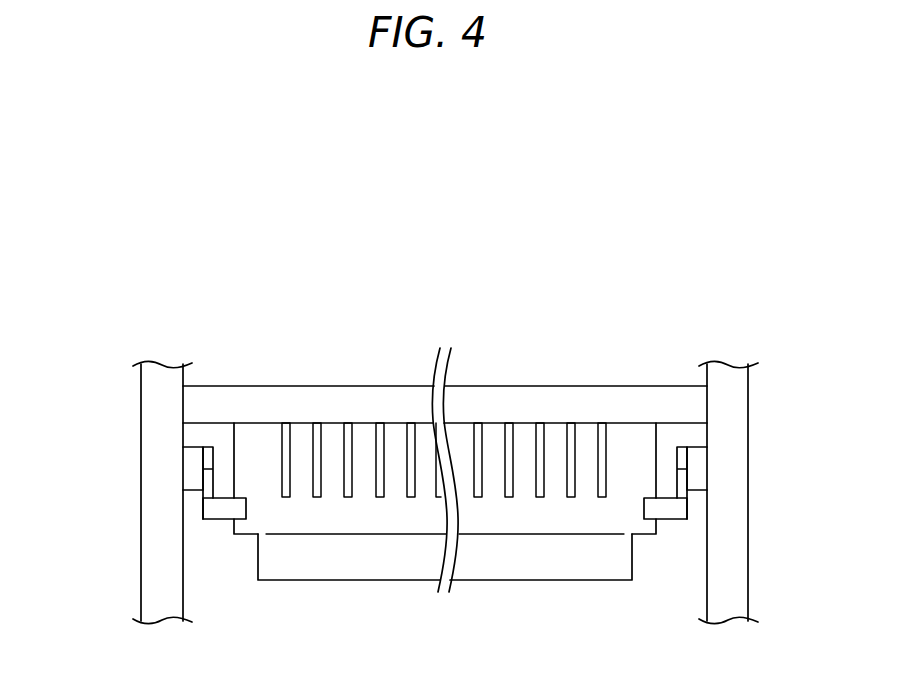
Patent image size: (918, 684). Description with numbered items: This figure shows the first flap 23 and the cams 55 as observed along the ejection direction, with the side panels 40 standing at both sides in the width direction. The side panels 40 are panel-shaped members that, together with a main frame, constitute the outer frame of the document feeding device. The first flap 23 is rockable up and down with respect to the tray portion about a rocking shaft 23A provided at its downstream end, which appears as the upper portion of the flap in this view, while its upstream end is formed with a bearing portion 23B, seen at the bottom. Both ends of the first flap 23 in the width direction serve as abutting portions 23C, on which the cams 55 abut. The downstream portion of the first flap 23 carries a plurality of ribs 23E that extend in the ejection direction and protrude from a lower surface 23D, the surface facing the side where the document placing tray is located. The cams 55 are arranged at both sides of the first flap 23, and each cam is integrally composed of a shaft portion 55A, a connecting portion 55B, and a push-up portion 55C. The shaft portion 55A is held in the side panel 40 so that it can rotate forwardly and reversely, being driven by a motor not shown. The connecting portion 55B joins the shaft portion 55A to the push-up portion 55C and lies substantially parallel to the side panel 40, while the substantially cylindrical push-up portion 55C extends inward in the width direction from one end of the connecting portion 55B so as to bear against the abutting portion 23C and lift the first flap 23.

The first flap 23 is at (584, 350).
The rocking shaft 23A is at (511, 398).
The bearing portion 23B is at (518, 570).
The abutting portions 23C is at (245, 536).
The lower surface 23D is at (393, 522).
The ribs 23E is at (343, 435).
The side panels 40 is at (152, 399).
The cams 55 is at (68, 466).
The shaft portion 55A is at (190, 472).
The connecting portion 55B is at (203, 510).
The push-up portion 55C is at (228, 515).